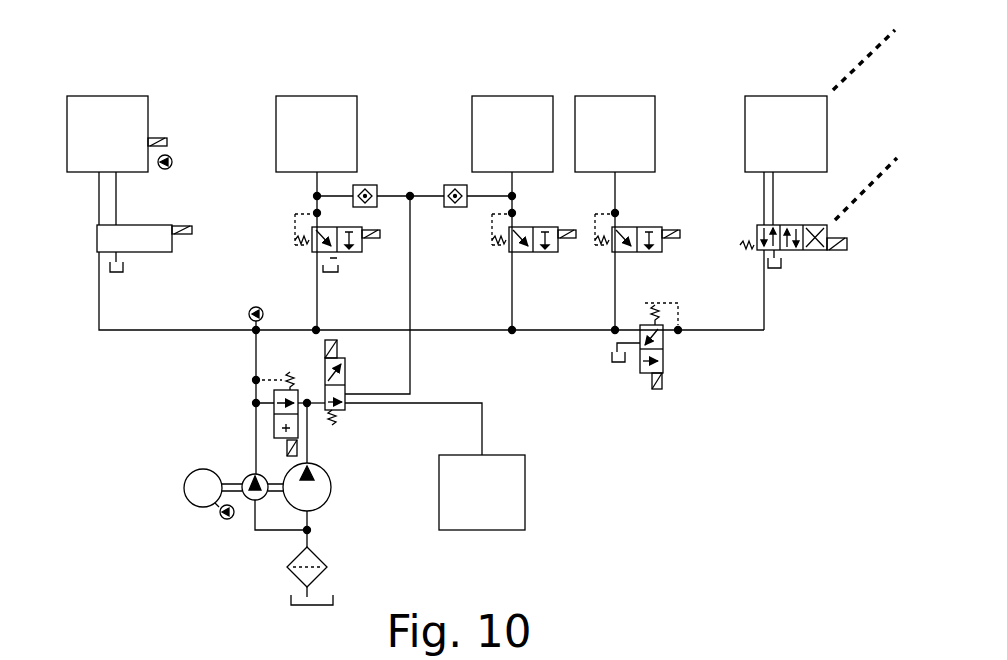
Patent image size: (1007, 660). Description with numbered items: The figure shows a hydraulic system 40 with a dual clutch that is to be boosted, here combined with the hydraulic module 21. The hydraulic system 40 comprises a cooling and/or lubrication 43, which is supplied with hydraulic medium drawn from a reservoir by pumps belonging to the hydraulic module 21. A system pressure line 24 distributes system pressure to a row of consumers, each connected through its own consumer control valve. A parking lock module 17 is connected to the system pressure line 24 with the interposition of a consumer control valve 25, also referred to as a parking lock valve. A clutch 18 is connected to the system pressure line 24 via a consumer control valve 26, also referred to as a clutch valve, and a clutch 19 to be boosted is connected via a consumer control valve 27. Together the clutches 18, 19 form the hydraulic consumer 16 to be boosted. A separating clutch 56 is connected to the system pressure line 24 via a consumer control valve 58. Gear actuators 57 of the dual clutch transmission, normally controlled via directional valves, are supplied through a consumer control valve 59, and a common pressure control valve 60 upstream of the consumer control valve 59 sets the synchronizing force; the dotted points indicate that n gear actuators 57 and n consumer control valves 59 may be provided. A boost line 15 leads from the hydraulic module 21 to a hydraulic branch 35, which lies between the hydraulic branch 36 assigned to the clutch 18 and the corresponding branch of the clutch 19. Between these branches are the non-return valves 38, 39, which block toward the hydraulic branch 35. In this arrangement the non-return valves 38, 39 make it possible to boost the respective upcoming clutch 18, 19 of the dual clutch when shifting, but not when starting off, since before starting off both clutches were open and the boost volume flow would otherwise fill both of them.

The hydraulic system 40 is at (213, 88).
The hydraulic consumer to be boosted 16 is at (491, 86).
The parking lock module 17 is at (119, 160).
The clutch 18 is at (316, 134).
The clutch to be boosted 19 is at (512, 134).
The separating clutch 56 is at (615, 134).
The gear actuators 57 is at (821, 125).
The cooling and/or lubrication 43 is at (482, 492).
The consumer control valve 25 is at (97, 238).
The consumer control valve 26 is at (308, 246).
The consumer control valve 27 is at (510, 253).
The consumer control valve 58 is at (650, 253).
The consumer control valve 59 is at (810, 252).
The pressure control valve 60 is at (664, 358).
The hydraulic branch 36 is at (314, 196).
The hydraulic branch 35 is at (410, 192).
The non-return valve 38 is at (362, 185).
The non-return valve 39 is at (448, 185).
The system pressure line 24 is at (153, 332).
The hydraulic module 21 is at (147, 487).
The boost line 15 is at (410, 354).